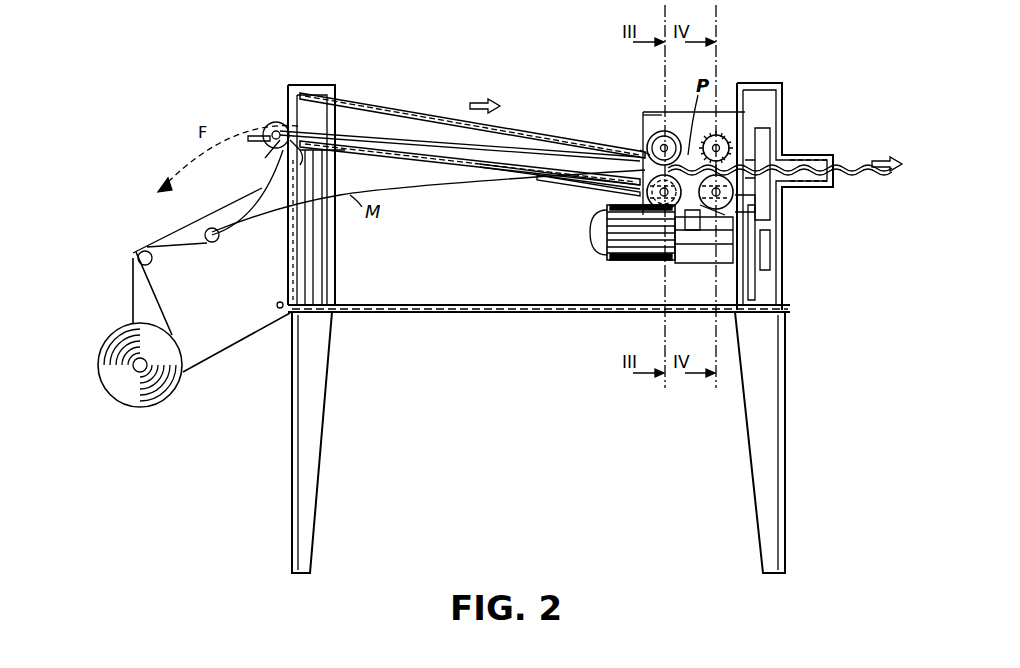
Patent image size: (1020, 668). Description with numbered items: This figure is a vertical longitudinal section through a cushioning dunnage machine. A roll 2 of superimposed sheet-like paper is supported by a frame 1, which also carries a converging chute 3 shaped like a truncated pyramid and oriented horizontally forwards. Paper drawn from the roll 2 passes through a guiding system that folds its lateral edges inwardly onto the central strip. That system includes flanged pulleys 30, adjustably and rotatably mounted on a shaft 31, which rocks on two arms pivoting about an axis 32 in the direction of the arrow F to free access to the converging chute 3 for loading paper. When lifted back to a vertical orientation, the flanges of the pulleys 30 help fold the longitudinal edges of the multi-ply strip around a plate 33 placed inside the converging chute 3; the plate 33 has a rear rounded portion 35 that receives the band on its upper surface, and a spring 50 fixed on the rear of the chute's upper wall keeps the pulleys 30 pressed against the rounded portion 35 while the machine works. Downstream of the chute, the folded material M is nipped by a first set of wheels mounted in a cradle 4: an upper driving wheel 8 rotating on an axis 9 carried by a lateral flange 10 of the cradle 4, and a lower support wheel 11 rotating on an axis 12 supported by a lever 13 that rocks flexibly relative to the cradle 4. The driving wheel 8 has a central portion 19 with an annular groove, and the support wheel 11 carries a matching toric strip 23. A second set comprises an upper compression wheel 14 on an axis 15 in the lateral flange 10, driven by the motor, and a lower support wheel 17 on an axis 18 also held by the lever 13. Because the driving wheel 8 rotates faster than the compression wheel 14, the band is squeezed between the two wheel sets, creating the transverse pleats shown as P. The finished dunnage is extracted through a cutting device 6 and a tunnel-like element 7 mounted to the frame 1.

The frame 1 is at (442, 312).
The roll 2 is at (100, 356).
The converging chute 3 is at (406, 117).
The cradle 4 is at (670, 112).
The cutting device 6 is at (762, 137).
The tunnel-like element 7 is at (822, 152).
The driving wheel 8 is at (647, 146).
The axis 9 is at (662, 144).
The lateral flange 10 is at (656, 116).
The support wheel 11 is at (640, 250).
The axis 12 is at (672, 210).
The lever 13 is at (694, 205).
The compression wheel 14 is at (714, 130).
The axis 15 is at (725, 170).
The lower support wheel 17 is at (700, 200).
The axis 18 is at (735, 200).
The central portion 19 is at (640, 155).
The toric strip 23 is at (518, 172).
The pulley 30 is at (282, 118).
The shaft 31 is at (268, 153).
The axis 32 is at (276, 305).
The plate 33 is at (424, 158).
The rear rounded portion 35 is at (265, 157).
The spring 50 is at (256, 132).